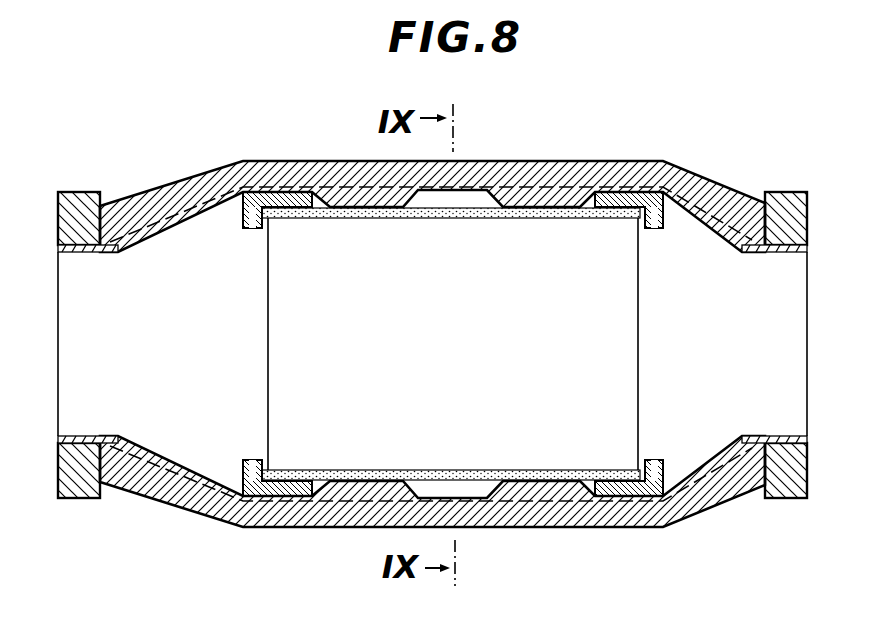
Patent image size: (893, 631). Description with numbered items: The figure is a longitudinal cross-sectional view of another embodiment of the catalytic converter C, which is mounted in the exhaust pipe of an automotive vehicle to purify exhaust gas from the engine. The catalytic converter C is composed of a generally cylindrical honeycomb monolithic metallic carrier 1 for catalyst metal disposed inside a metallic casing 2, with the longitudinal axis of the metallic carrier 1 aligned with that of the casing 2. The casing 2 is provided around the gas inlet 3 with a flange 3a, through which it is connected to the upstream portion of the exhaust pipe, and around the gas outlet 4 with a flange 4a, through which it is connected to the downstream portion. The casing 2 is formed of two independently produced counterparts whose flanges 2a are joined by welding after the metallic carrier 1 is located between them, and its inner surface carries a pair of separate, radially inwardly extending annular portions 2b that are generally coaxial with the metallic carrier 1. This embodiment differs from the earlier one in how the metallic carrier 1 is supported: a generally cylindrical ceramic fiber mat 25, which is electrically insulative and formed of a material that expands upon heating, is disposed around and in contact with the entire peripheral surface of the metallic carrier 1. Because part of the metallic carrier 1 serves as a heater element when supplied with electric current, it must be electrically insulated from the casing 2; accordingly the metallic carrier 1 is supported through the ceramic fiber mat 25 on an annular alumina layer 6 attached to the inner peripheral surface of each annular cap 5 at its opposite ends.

The honeycomb monolithic metallic carrier 1 is at (512, 444).
The metallic casing 2 is at (432, 355).
The flanges of casing counterparts 2a is at (360, 522).
The radially inwardly extending annular portions 2b is at (353, 190).
The gas inlet 3 is at (75, 290).
The flange 3a is at (82, 488).
The gas outlet 4 is at (790, 290).
The flange 4a is at (783, 488).
The annular cap 5 is at (276, 194).
The annular alumina layer 6 is at (252, 230).
The ceramic fiber mat 25 is at (531, 206).
The catalytic converter C is at (648, 128).